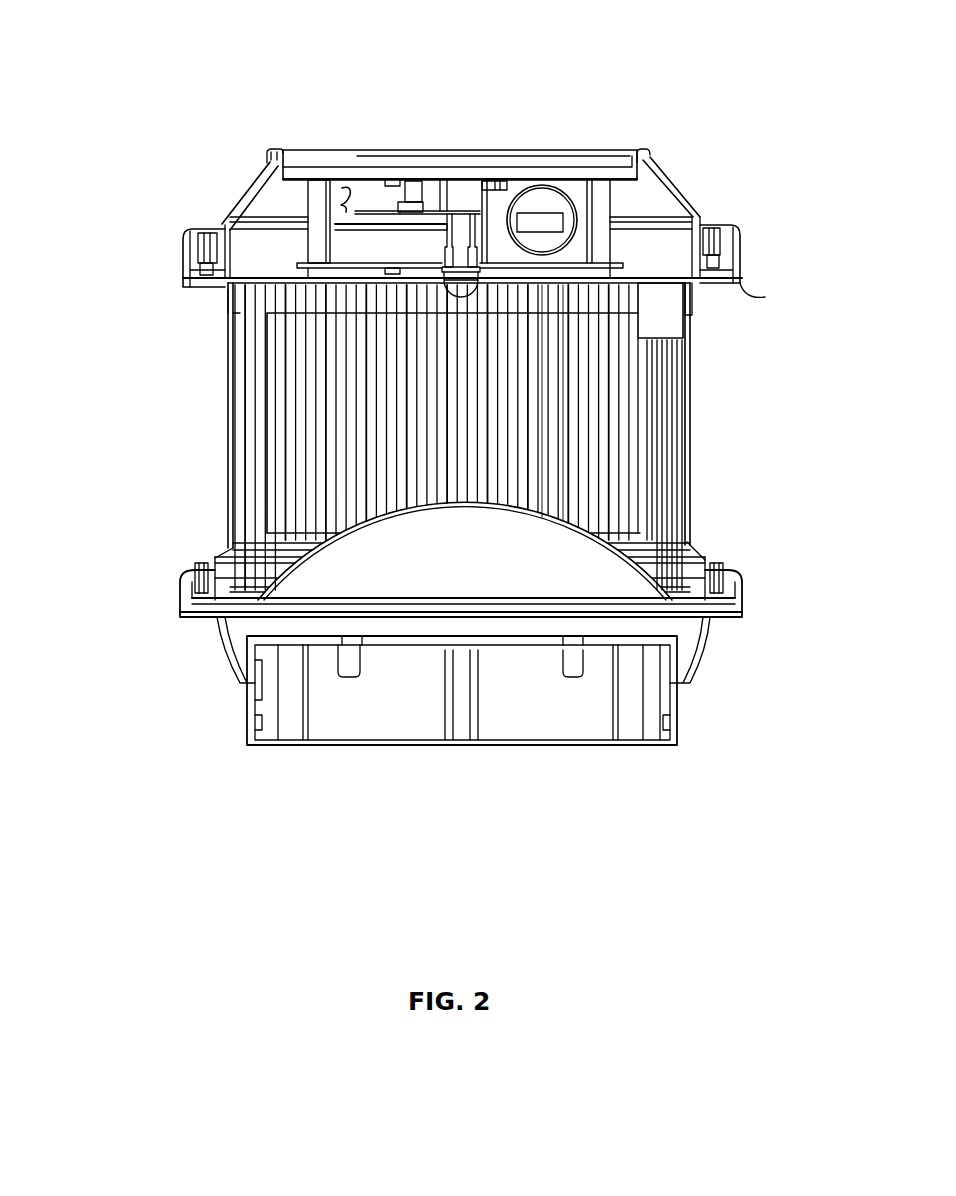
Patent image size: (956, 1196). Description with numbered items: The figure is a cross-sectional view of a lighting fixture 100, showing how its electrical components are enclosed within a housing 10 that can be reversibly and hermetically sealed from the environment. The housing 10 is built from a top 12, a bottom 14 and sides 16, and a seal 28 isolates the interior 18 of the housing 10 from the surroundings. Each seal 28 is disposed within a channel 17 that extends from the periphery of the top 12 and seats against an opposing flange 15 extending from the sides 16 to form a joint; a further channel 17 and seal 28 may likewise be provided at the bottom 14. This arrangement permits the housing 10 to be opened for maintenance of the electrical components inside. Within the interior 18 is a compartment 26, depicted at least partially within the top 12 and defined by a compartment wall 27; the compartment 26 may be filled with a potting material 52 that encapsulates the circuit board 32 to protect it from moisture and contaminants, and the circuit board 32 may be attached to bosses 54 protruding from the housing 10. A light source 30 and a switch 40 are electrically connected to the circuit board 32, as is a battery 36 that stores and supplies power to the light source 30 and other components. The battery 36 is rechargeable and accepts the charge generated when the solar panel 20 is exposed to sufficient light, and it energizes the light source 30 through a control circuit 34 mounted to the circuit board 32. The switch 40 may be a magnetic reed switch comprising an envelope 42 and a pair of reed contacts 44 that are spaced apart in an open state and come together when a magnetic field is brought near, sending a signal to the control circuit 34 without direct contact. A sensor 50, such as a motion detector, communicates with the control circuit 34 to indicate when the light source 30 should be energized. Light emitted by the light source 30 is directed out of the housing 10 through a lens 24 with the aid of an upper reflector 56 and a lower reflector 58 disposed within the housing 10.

The fixture 100 is at (148, 78).
The housing 10 is at (182, 238).
The top 12 is at (233, 200).
The bottom 14 is at (733, 567).
The flange 15 is at (731, 285).
The sides 16 is at (693, 300).
The channel 17 is at (733, 224).
The interior 18 is at (316, 407).
The solar panel 20 is at (567, 148).
The lens 24 is at (228, 497).
The compartment 26 is at (328, 207).
The compartment wall 27 is at (275, 158).
The seal 28 is at (722, 246).
The light source 30 is at (472, 294).
The circuit board 32 is at (352, 183).
The control circuit 34 is at (367, 226).
The battery 36 is at (575, 193).
The switch 40 is at (430, 180).
The envelope 42 is at (448, 180).
The reed contacts 44 is at (503, 180).
The sensor 50 is at (682, 320).
The potting material 52 is at (370, 212).
The bosses 54 is at (388, 183).
The upper reflector 56 is at (570, 268).
The lower reflector 58 is at (573, 527).